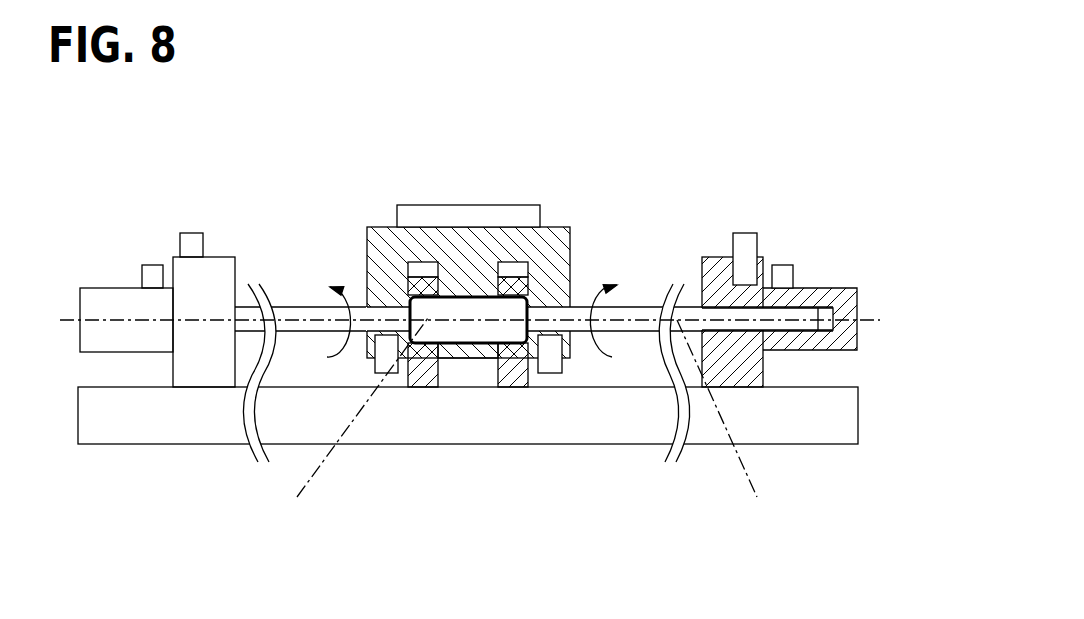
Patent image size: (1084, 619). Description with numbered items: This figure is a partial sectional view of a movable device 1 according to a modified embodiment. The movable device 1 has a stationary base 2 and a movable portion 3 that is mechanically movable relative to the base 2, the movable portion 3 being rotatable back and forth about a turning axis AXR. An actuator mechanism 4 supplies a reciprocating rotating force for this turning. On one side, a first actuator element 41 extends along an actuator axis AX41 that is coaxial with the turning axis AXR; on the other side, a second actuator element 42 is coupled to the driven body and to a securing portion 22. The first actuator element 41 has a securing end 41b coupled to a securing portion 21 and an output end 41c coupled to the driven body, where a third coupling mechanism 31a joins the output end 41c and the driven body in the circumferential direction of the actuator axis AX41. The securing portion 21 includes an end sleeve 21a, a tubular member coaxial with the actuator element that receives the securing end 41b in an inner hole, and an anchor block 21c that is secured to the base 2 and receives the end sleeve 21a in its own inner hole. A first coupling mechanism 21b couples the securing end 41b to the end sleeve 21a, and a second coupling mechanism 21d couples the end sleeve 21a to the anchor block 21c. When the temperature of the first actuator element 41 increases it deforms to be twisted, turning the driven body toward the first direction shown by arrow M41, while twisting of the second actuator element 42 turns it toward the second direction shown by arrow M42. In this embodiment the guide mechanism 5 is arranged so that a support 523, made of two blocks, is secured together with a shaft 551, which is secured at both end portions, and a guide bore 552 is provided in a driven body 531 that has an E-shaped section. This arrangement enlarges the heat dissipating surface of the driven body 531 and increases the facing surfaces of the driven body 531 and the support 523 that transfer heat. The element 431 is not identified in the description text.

The movable device 1 is at (695, 180).
The base 2 is at (862, 455).
The movable portion 3 is at (368, 182).
The actuator mechanism 4 is at (625, 182).
The guide mechanism 5 is at (417, 397).
The securing portion 21 is at (871, 212).
The end sleeve 21a is at (830, 288).
The first coupling mechanism 21b is at (793, 263).
The anchor block 21c is at (775, 265).
The second coupling mechanism 21d is at (740, 233).
The securing portion 22 is at (140, 228).
The third coupling mechanism 31a is at (540, 332).
The first actuator element 41 is at (550, 227).
The securing end 41b is at (790, 322).
The output end 41c is at (557, 315).
The second actuator element 42 is at (272, 283).
The coupling portion 431 is at (655, 280).
The support 523 is at (532, 377).
The driven body 531 is at (386, 227).
The shaft 551 is at (462, 327).
The guide bore 552 is at (472, 347).
The arrow M41 is at (609, 301).
The arrow M42 is at (330, 301).
The turning axis AXR is at (470, 427).
The actuator axis AX41 is at (734, 428).